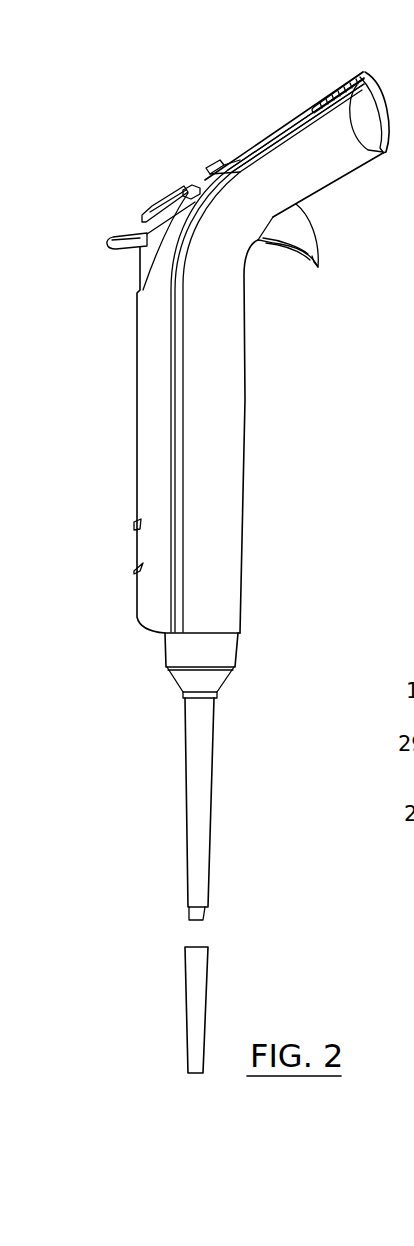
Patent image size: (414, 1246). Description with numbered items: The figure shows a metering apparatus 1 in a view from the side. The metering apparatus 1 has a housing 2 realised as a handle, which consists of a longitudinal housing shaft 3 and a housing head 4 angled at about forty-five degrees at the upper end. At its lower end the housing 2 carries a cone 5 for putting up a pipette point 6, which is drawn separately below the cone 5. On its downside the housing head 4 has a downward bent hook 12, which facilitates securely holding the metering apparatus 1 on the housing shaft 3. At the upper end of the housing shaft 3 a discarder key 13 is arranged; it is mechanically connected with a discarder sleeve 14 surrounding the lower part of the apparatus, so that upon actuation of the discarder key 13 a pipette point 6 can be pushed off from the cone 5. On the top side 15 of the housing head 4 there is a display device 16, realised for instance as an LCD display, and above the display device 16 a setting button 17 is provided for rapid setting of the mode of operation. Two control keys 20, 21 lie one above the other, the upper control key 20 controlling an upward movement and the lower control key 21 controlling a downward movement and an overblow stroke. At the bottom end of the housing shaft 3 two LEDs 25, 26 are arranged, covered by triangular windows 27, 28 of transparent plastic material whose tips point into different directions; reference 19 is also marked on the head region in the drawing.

The metering apparatus 1 is at (126, 401).
The housing 2 is at (145, 341).
The housing shaft 3 is at (228, 428).
The housing head 4 is at (337, 157).
The cone 5 is at (192, 917).
The pipette point 6 is at (198, 995).
The hook 12 is at (297, 253).
The discarder key 13 is at (125, 231).
The discarder sleeve 14 is at (192, 773).
The top side 15 is at (281, 116).
The display device 16 is at (257, 137).
The setting button 17 is at (333, 82).
The edge 19 is at (203, 203).
The upper control key 20 is at (203, 166).
The lower control key 21 is at (160, 201).
The LED 25 is at (94, 492).
The window 27 is at (133, 524).
The LED 26 is at (96, 548).
The window 28 is at (132, 570).